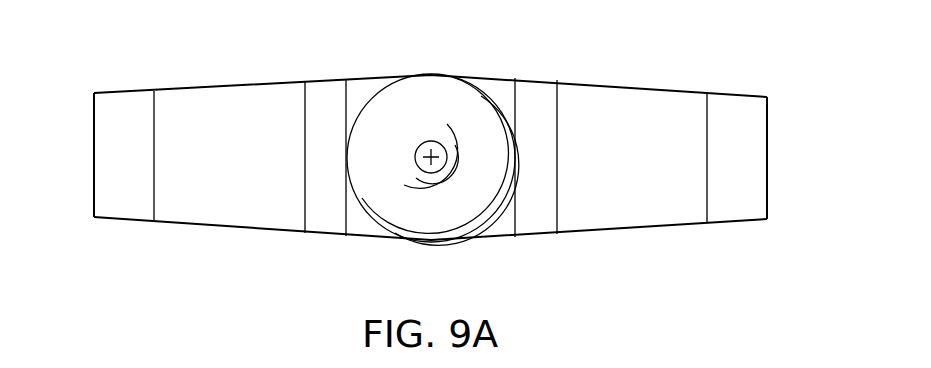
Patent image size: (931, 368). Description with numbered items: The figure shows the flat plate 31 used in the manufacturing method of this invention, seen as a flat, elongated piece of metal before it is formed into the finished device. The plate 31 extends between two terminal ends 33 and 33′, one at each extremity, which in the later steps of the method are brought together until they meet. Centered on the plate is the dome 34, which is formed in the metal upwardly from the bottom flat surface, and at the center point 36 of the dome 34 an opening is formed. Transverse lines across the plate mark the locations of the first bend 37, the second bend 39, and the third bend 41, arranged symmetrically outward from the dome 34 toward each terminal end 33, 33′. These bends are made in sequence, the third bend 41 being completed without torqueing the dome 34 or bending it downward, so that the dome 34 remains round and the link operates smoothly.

The flat plate 31 is at (692, 63).
The terminal end 33 is at (767, 148).
The terminal end 33′ is at (94, 148).
The dome 34 is at (468, 101).
The center point 36 is at (435, 163).
The first bend 37 is at (153, 222).
The second bend 39 is at (305, 235).
The third bend 41 is at (346, 238).